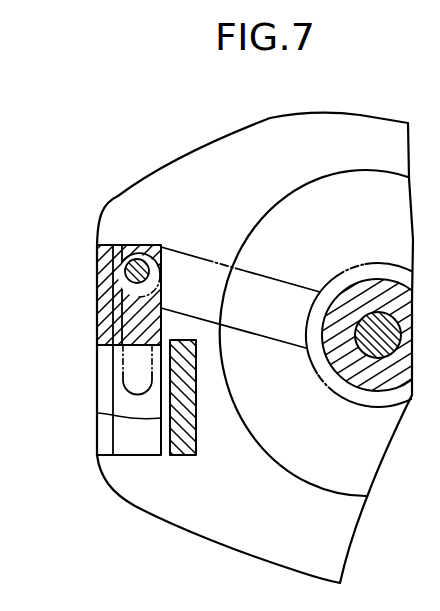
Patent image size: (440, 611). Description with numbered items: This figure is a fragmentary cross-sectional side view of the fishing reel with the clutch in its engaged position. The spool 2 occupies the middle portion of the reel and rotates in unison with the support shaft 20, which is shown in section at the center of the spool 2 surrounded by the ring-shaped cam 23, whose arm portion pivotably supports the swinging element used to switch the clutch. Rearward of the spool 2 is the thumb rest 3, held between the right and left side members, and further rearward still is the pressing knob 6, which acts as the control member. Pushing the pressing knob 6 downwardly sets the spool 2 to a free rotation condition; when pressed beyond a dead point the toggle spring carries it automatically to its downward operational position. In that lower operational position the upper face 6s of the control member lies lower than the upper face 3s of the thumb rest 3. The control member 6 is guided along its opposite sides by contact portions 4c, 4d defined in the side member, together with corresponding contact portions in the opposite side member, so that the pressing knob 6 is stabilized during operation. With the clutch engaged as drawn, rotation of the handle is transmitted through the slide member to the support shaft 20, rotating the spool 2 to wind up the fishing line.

The spool 2 is at (320, 177).
The ring-shaped cam 23 is at (384, 262).
The support shaft 20 is at (378, 360).
The upper face of the thumb rest 3s is at (189, 336).
The thumb rest 3 is at (192, 457).
The pressing knob 6 is at (97, 303).
The upper face of the control member 6s is at (122, 244).
The contact portion 4d is at (112, 374).
The contact portion 4c is at (97, 413).